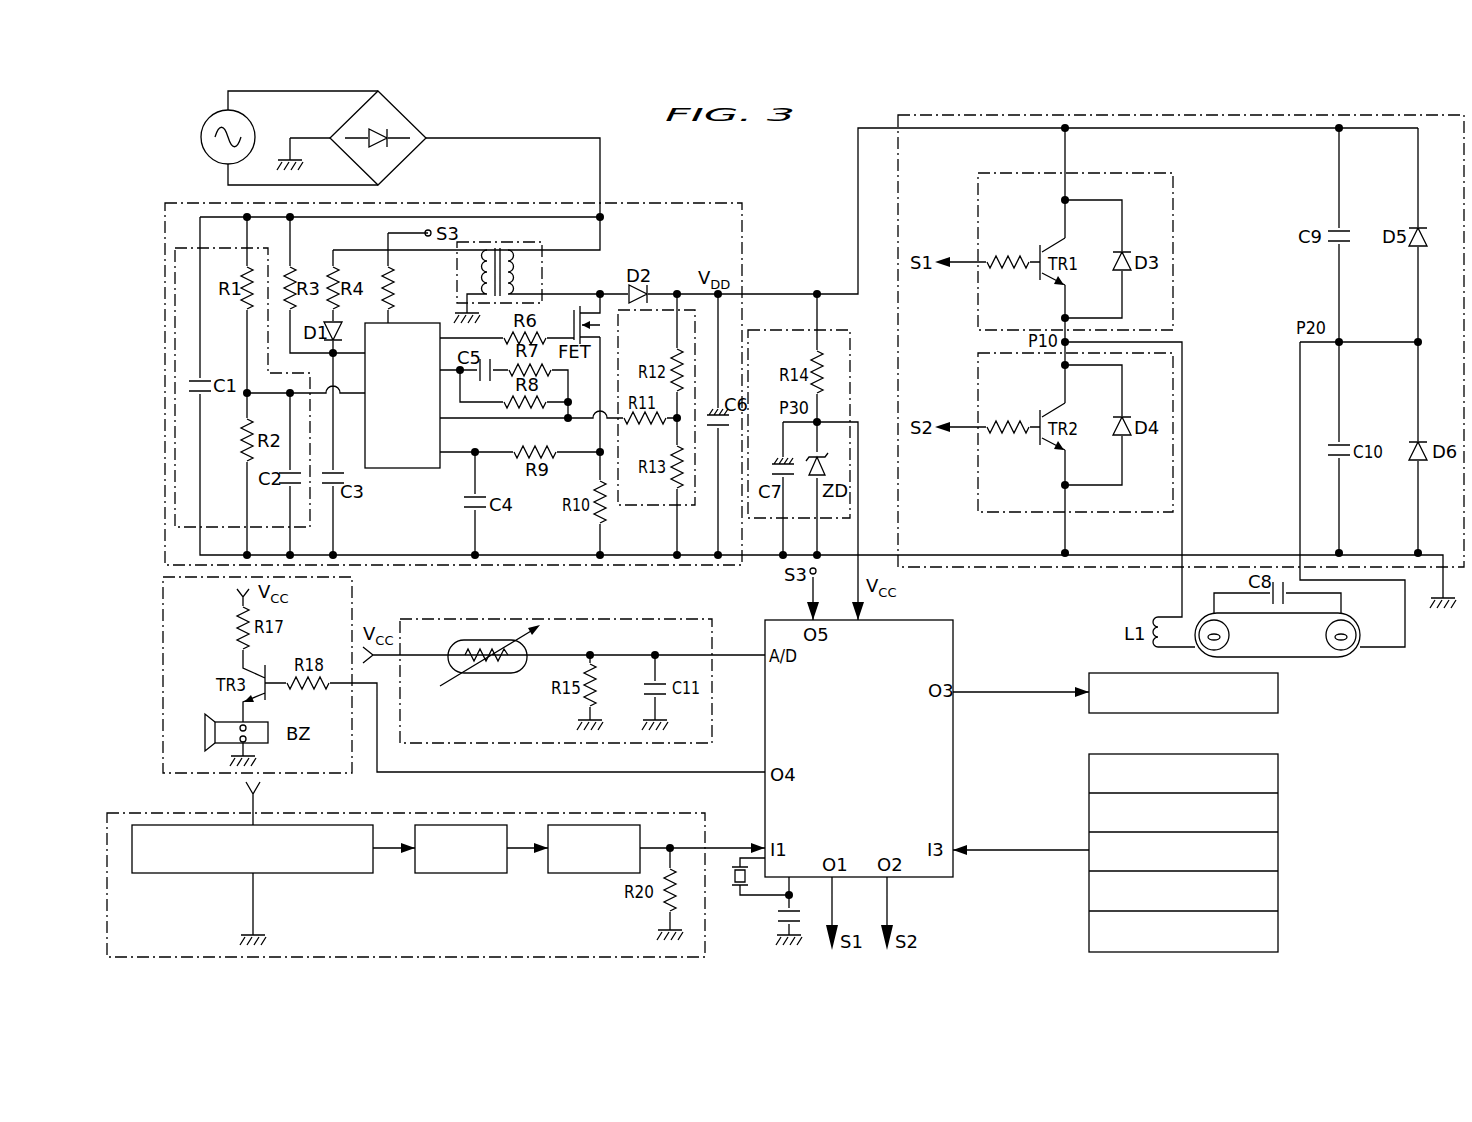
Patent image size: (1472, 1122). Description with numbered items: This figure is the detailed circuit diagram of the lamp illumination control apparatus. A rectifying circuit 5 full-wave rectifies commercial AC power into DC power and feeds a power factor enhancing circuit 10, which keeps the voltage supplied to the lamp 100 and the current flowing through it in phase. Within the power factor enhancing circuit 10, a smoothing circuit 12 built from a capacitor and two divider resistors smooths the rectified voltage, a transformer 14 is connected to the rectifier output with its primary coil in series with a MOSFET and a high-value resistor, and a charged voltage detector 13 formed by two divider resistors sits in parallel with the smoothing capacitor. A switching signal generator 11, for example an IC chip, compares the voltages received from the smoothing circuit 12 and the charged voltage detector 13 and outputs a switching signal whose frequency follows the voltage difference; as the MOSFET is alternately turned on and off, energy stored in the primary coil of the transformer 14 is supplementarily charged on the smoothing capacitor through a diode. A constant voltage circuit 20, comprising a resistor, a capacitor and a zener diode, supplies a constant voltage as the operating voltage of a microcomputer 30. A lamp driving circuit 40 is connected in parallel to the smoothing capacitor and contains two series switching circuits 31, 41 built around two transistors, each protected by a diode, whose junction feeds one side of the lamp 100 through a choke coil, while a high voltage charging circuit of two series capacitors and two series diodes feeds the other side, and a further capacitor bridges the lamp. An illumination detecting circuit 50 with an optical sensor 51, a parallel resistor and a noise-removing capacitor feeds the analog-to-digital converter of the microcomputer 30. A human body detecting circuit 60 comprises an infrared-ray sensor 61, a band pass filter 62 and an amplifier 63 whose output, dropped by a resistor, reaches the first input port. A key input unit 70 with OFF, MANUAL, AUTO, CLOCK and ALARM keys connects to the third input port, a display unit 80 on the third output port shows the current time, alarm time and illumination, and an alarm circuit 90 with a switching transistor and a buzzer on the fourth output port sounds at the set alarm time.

The rectifying circuit 5 is at (405, 116).
The power factor enhancing circuit 10 is at (168, 390).
The switching signal generator 11 is at (400, 470).
The smoothing circuit 12 is at (175, 247).
The charged voltage detector 13 is at (670, 507).
The transformer 14 is at (543, 248).
The constant voltage circuit 20 is at (770, 326).
The microcomputer 30 is at (955, 752).
The switching circuit 31 is at (1175, 225).
The lamp driving circuit 40 is at (1186, 114).
The switching circuit 41 is at (1175, 478).
The illumination detecting circuit 50 is at (593, 617).
The optical sensor 51 is at (484, 676).
The human body detecting circuit 60 is at (126, 812).
The infrared-ray sensor 61 is at (310, 875).
The band pass filter 62 is at (460, 875).
The amplifier 63 is at (594, 875).
The key input unit 70 is at (1280, 852).
The display unit 80 is at (1280, 692).
The alarm circuit 90 is at (162, 632).
The lamp 100 is at (1357, 632).